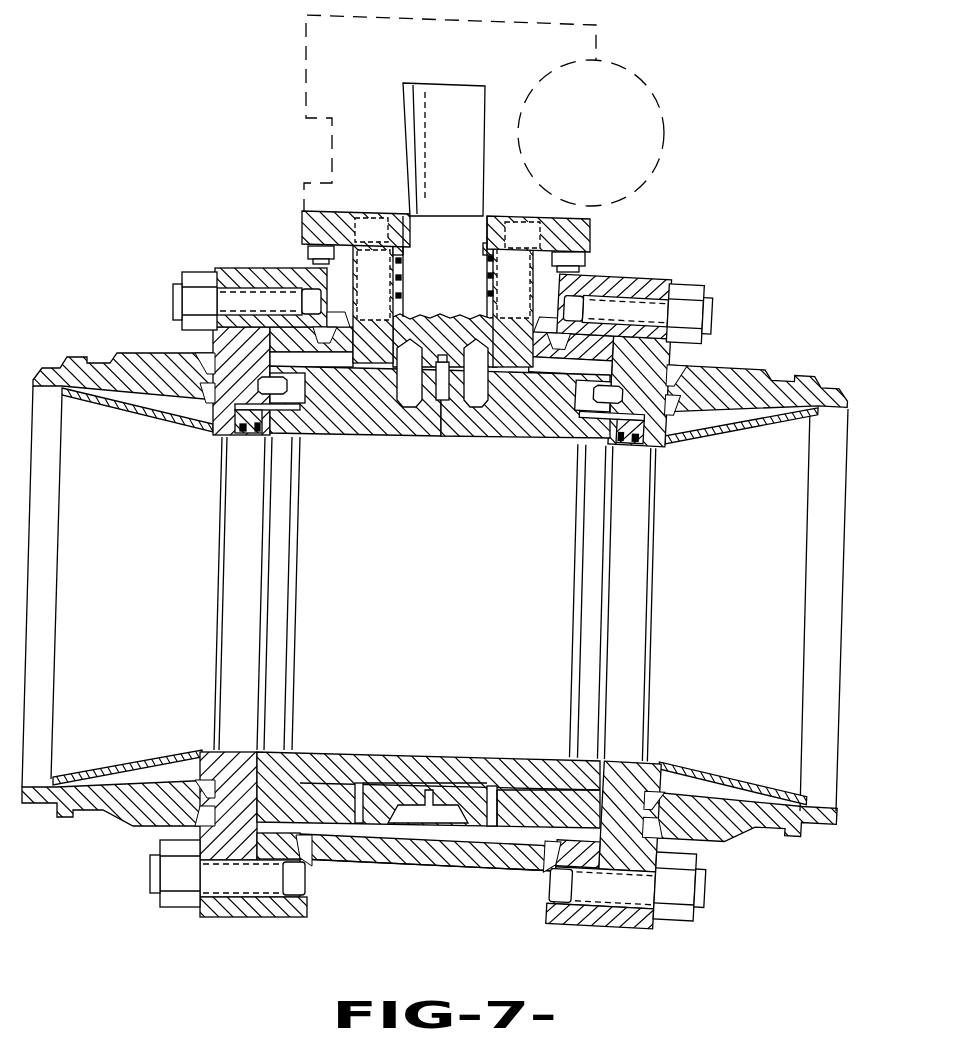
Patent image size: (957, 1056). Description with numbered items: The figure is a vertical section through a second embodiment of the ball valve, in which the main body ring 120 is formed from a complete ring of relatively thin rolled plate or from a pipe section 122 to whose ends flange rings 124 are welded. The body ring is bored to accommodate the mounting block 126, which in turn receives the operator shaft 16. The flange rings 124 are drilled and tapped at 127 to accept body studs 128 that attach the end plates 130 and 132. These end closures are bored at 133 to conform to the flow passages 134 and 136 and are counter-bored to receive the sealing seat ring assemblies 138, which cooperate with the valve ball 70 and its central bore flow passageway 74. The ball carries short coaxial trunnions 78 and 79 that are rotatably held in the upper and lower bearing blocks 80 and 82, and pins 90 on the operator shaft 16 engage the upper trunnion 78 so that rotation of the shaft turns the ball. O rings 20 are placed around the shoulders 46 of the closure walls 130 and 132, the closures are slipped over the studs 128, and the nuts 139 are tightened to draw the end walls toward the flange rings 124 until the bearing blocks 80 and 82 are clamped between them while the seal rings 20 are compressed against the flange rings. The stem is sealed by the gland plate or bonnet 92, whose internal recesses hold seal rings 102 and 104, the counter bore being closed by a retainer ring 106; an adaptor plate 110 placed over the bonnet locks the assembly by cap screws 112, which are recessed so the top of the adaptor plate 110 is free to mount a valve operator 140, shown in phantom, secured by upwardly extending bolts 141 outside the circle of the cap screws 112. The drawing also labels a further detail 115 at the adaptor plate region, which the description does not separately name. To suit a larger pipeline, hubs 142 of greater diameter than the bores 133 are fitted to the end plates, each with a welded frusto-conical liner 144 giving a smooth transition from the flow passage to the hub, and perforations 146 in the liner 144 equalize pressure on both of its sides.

The operator shaft 16 is at (479, 124).
The O-ring seal 20 is at (654, 853).
The shoulder 46 is at (597, 842).
The valve ball 70 is at (340, 757).
The central bore flow passageway 74 is at (428, 598).
The upper trunnion 78 is at (386, 396).
The lower trunnion 79 is at (378, 796).
The upper bearing block 80 is at (536, 397).
The lower bearing block 82 is at (528, 810).
The pins 90 is at (412, 382).
The gland plate or bonnet 92 is at (350, 213).
The seal ring 102 is at (404, 278).
The seal ring 104 is at (404, 257).
The retainer ring 106 is at (403, 245).
The adaptor plate 110 is at (305, 222).
The cap screws 112 is at (543, 188).
The actuator mounting 115 is at (573, 210).
The main body ring 120 is at (420, 876).
The pipe section 122 is at (351, 866).
The flange rings 124 is at (300, 911).
The mounting block 126 is at (535, 320).
The tapped holes 127 is at (261, 898).
The body studs 128 is at (218, 274).
The end plate 130 is at (236, 276).
The end plate 132 is at (660, 288).
The bore 133 is at (221, 432).
The flow passage 134 is at (298, 602).
The flow passage 136 is at (600, 613).
The sealing seat ring assemblies 138 is at (252, 440).
The nuts 139 is at (173, 903).
The valve operator 140 is at (673, 136).
The bolts 141 is at (306, 247).
The hub 142 is at (138, 345).
The frusto-conical liner 144 is at (156, 412).
The perforations 146 is at (680, 440).